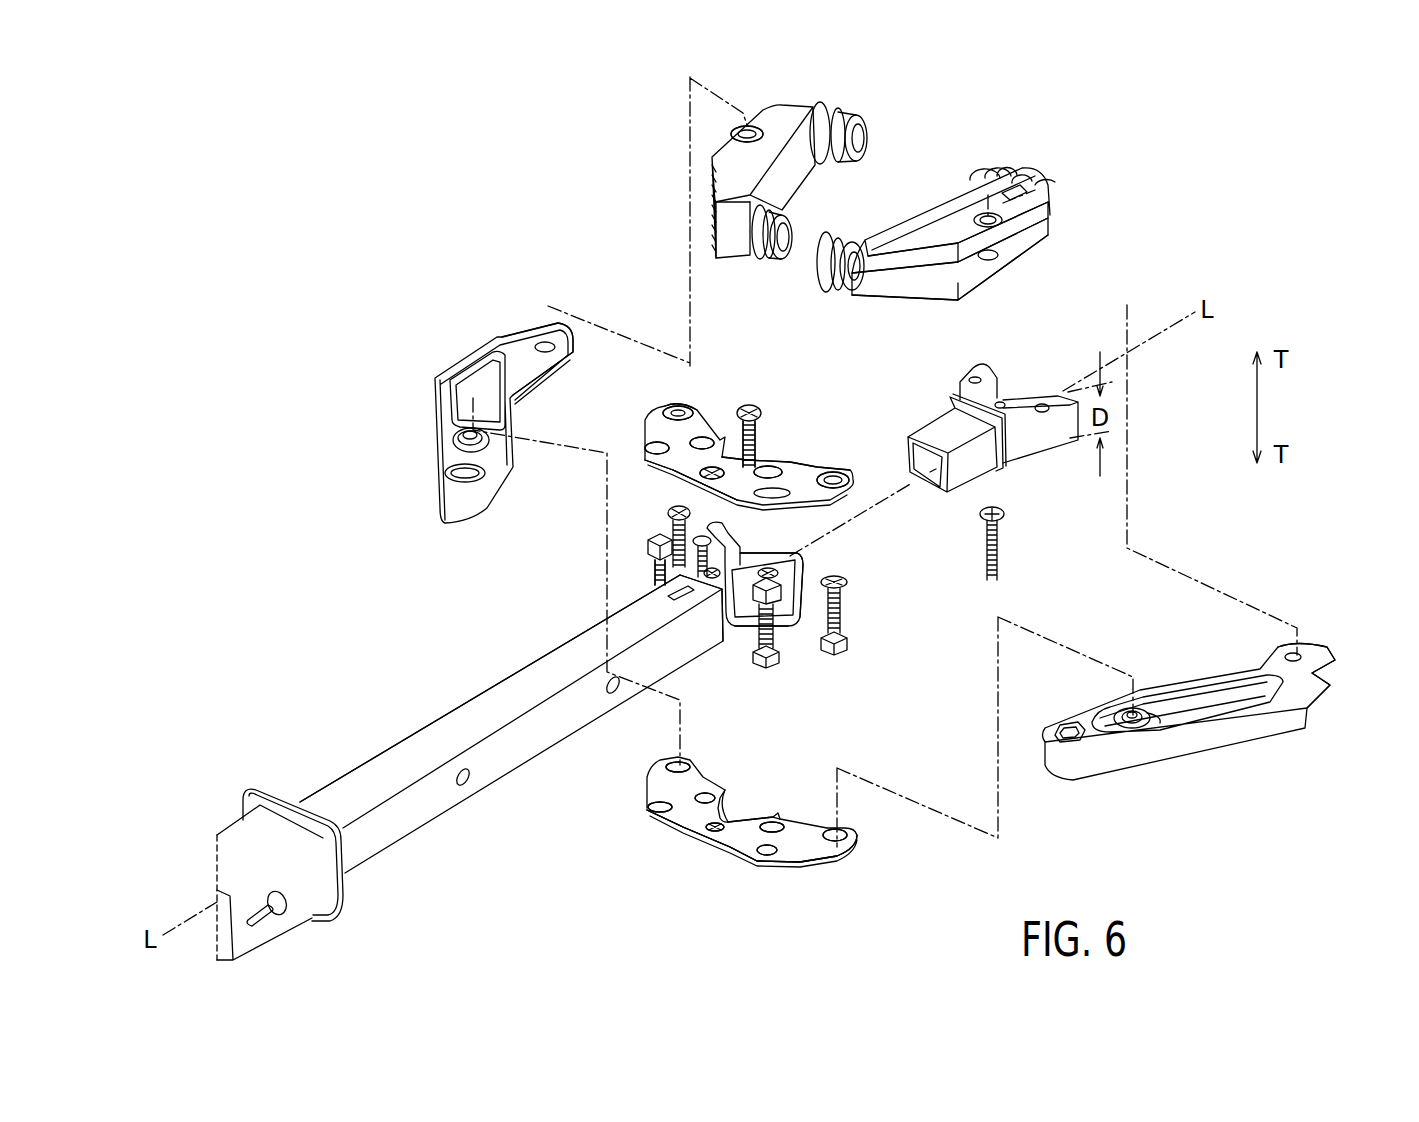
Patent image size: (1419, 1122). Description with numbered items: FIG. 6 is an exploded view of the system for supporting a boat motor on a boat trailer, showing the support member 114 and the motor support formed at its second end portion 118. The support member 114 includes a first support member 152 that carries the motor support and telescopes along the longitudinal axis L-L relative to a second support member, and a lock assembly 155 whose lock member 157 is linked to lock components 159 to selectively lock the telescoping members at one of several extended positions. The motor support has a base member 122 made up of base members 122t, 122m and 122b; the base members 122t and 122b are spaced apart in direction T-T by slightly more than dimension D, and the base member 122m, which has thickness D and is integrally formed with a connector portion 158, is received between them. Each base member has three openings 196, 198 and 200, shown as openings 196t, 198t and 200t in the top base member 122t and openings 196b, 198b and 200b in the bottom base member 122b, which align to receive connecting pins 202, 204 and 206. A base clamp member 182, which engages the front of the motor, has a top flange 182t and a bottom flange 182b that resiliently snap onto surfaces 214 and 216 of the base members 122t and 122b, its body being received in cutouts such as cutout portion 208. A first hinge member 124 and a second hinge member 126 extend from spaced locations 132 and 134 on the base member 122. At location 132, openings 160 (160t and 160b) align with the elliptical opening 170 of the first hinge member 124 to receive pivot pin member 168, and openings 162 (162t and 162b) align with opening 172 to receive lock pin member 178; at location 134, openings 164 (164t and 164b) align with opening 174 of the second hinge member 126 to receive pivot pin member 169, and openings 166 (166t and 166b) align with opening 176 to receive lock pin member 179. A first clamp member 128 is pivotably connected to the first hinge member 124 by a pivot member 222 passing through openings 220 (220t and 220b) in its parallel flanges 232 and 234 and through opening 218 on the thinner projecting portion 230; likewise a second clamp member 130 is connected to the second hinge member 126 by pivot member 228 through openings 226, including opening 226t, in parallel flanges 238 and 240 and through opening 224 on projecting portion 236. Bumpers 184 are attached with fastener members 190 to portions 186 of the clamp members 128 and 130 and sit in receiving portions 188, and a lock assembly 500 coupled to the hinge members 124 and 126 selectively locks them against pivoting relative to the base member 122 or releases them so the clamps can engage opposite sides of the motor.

The support member 114 is at (392, 845).
The second end portion 118 is at (682, 653).
The base member 122 is at (787, 862).
The base member 122t is at (807, 477).
The base member 122b is at (743, 860).
The base member 122m is at (993, 387).
The first hinge member 124 is at (1223, 727).
The second hinge member 126 is at (462, 387).
The first clamp member 128 is at (948, 220).
The second clamp member 130 is at (732, 158).
The spaced location 132 is at (800, 473).
The spaced location 134 is at (660, 410).
The first support member 152 is at (436, 732).
The lock assembly 155 is at (309, 905).
The lock member 157 is at (279, 914).
The connector portion 158 is at (970, 463).
The lock components 159 is at (607, 682).
The openings 160 is at (850, 476).
The opening 160t is at (838, 472).
The opening 160b is at (848, 835).
The openings 162 is at (845, 512).
The opening 162t is at (862, 495).
The opening 162b is at (747, 848).
The openings 164 is at (677, 406).
The opening 164t is at (672, 410).
The opening 164b is at (677, 764).
The openings 166 is at (650, 443).
The opening 166t is at (648, 448).
The opening 166b is at (658, 811).
The pivot pin member 168 is at (845, 580).
The pivot pin member 169 is at (676, 506).
The opening 170 is at (1137, 723).
The opening 172 is at (1072, 740).
The opening 174 is at (452, 447).
The opening 176 is at (445, 475).
The lock pin member 178 is at (782, 633).
The lock pin member 179 is at (645, 548).
The base clamp member 182 is at (777, 553).
The top flange 182t is at (743, 560).
The bottom flange 182b is at (743, 628).
The bumpers 184 is at (862, 124).
The portions 186 is at (818, 105).
The receiving portions 188 is at (838, 110).
The fastener members 190 is at (860, 288).
The opening 196 is at (780, 467).
The top hole 196t is at (772, 467).
The bottom hole 196b is at (773, 822).
The opening 198 is at (712, 479).
The top hole 198t is at (645, 460).
The bottom hole 198b is at (714, 831).
The opening 200 is at (704, 440).
The top hole 200t is at (700, 437).
The bottom hole 200b is at (706, 793).
The connecting pin 202 is at (807, 568).
The connecting pin 204 is at (672, 594).
The connecting pin 206 is at (656, 535).
The cutout portion 208 is at (762, 422).
The surface 214 is at (680, 413).
The surface 216 is at (820, 865).
The opening 218 is at (1297, 656).
The openings 220 is at (980, 213).
The opening 220t is at (1050, 218).
The opening 220b is at (1000, 252).
The pivot member 222 is at (1007, 517).
The opening 224 is at (545, 342).
The openings 226 is at (757, 122).
The opening 226t is at (738, 127).
The pivot member 228 is at (757, 410).
The projecting portion 230 is at (1327, 683).
The parallel flange 232 is at (920, 257).
The parallel flange 234 is at (1000, 272).
The projecting portion 236 is at (523, 337).
The parallel flange 238 is at (720, 183).
The parallel flange 240 is at (730, 220).
The lock assembly 500 is at (650, 565).